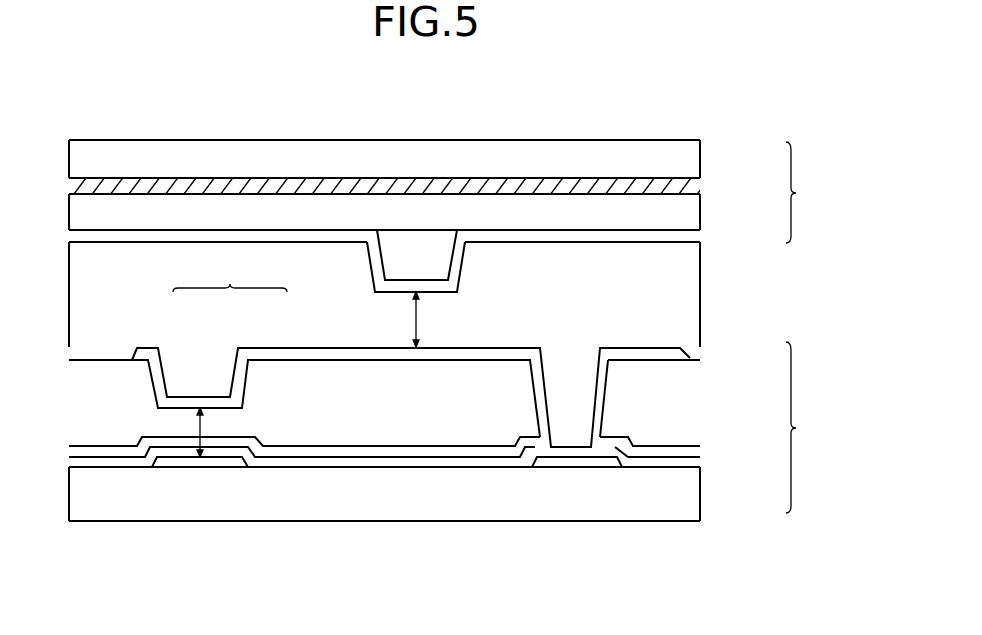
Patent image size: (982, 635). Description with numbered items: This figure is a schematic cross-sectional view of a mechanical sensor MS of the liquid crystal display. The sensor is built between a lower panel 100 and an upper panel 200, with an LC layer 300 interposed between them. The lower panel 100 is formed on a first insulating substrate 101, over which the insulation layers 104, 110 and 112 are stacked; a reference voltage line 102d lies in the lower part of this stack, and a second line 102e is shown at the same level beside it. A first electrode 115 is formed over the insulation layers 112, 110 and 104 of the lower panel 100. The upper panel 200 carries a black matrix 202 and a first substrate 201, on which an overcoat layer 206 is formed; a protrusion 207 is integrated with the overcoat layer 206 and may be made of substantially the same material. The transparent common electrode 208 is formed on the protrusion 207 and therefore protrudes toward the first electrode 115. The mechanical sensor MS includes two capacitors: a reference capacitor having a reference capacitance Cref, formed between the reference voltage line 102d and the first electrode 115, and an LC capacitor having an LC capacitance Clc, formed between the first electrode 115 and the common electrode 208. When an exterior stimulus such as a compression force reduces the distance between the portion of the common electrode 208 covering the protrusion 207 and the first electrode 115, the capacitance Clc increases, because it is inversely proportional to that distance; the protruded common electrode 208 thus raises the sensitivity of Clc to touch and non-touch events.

The second substrate 201 is at (688, 155).
The black matrix 202 is at (688, 185).
The overcoat layer 206 is at (688, 211).
The common electrode 208 is at (688, 237).
The protrusion 207 is at (438, 265).
The upper panel 200 is at (813, 192).
The LC layer 300 is at (688, 301).
The first electrode 115 is at (686, 352).
The insulation layer 112 is at (690, 398).
The insulation layer 110 is at (695, 447).
The insulation layer 104 is at (690, 463).
The first insulating substrate 101 is at (690, 500).
The lower panel 100 is at (814, 427).
The reference voltage line 102d is at (202, 468).
The gate electrode of pixel transistor 102e is at (578, 468).
The mechanical sensor MS is at (230, 274).
The reference capacitance Cref is at (200, 408).
The LC capacitance Clc is at (416, 319).